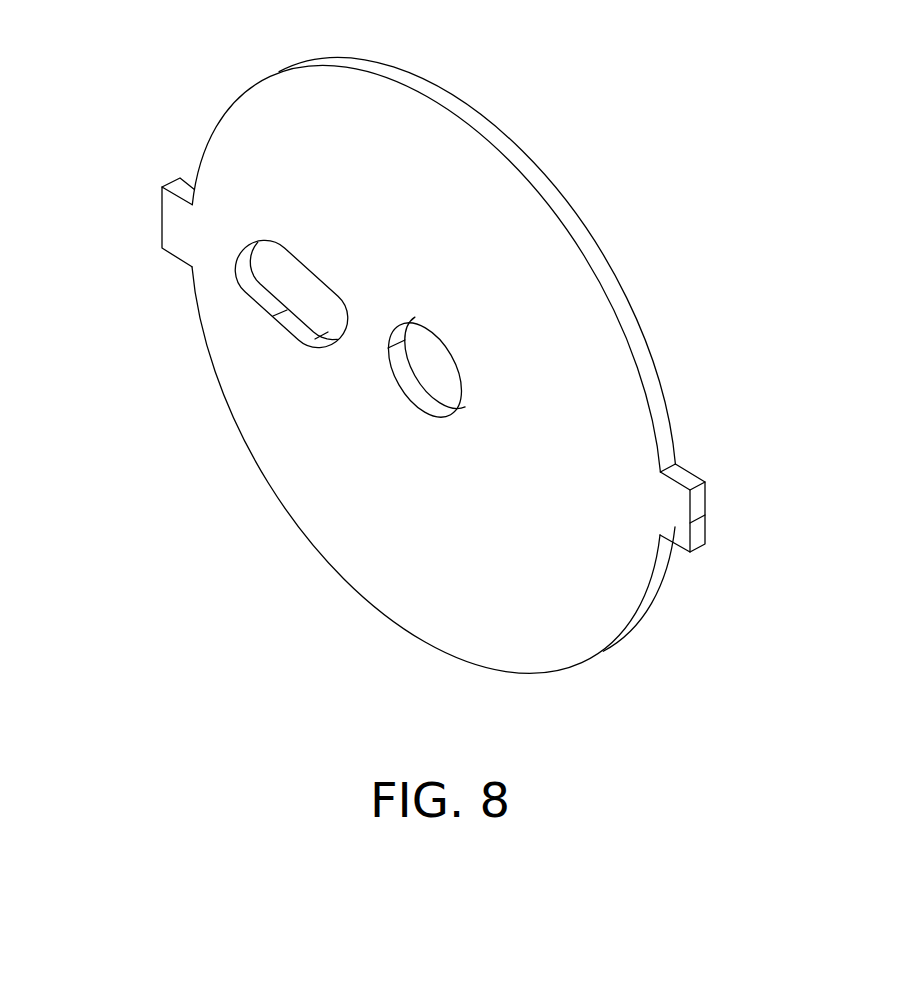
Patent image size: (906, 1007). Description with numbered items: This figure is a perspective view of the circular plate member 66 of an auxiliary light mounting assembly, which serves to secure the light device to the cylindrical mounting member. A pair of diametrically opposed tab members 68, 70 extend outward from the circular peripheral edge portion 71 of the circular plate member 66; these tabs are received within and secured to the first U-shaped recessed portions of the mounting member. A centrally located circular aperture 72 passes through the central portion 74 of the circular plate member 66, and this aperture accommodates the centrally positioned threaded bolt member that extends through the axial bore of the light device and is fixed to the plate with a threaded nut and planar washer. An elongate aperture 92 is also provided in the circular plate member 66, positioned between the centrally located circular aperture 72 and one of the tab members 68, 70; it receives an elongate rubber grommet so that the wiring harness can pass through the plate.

The circular plate member 66 is at (300, 600).
The tab member 68 is at (176, 181).
The tab member 70 is at (685, 483).
The circular peripheral edge portion 71 is at (573, 230).
The centrally located circular aperture 72 is at (407, 377).
The central portion 74 is at (425, 421).
The elongate aperture 92 is at (252, 285).